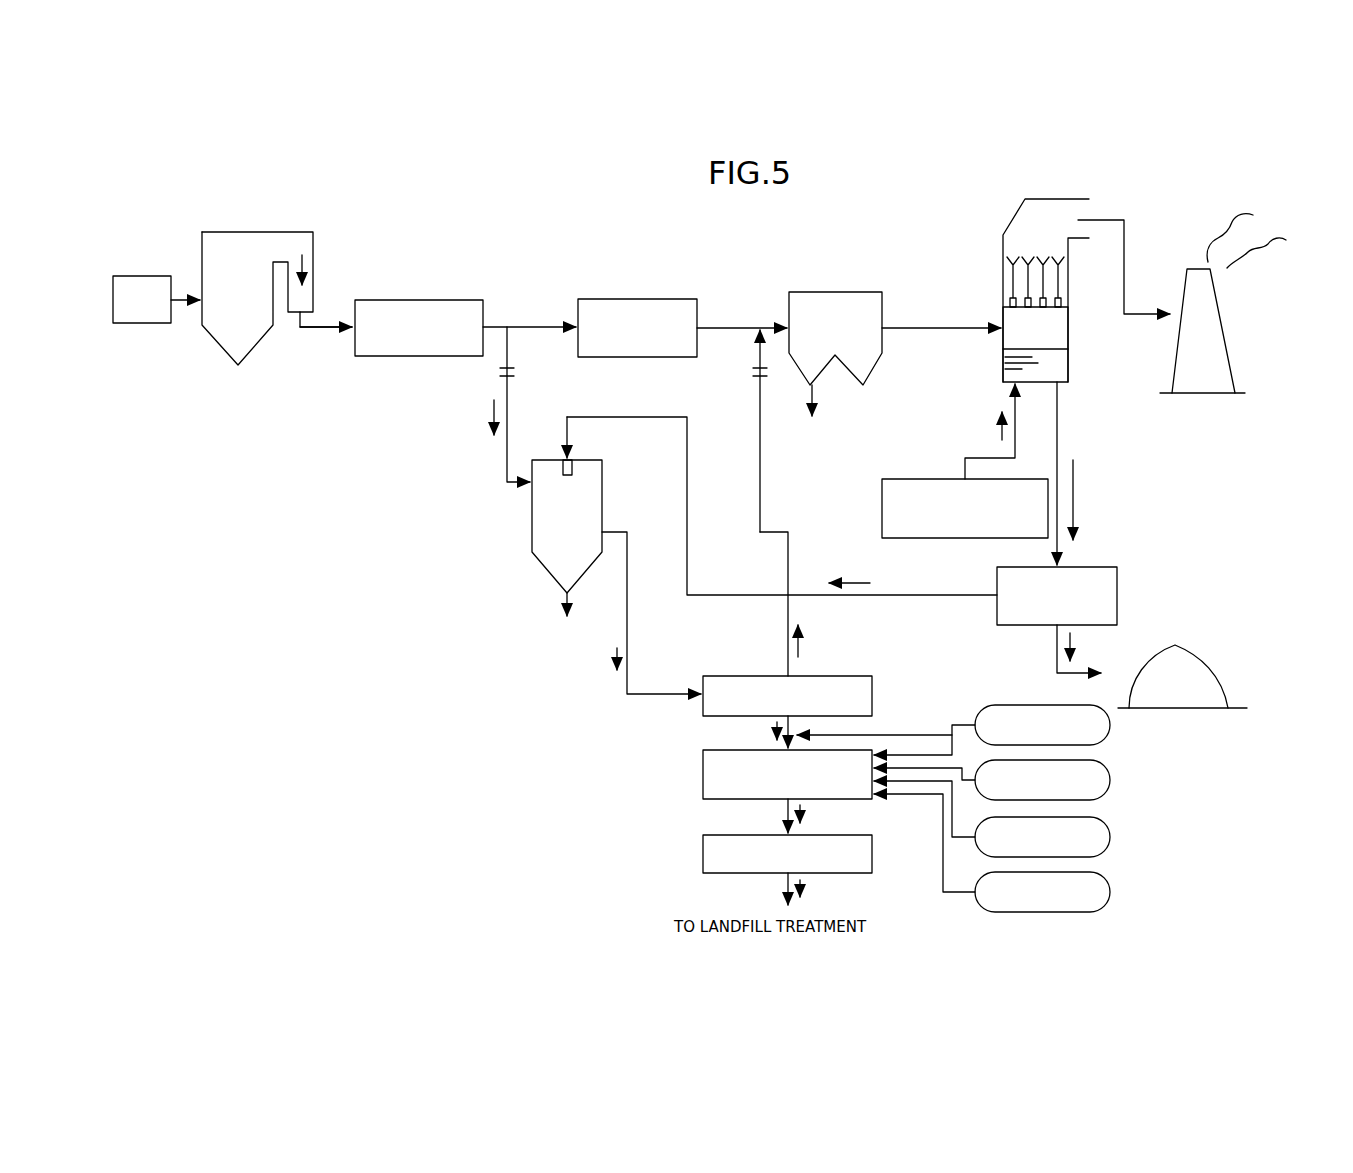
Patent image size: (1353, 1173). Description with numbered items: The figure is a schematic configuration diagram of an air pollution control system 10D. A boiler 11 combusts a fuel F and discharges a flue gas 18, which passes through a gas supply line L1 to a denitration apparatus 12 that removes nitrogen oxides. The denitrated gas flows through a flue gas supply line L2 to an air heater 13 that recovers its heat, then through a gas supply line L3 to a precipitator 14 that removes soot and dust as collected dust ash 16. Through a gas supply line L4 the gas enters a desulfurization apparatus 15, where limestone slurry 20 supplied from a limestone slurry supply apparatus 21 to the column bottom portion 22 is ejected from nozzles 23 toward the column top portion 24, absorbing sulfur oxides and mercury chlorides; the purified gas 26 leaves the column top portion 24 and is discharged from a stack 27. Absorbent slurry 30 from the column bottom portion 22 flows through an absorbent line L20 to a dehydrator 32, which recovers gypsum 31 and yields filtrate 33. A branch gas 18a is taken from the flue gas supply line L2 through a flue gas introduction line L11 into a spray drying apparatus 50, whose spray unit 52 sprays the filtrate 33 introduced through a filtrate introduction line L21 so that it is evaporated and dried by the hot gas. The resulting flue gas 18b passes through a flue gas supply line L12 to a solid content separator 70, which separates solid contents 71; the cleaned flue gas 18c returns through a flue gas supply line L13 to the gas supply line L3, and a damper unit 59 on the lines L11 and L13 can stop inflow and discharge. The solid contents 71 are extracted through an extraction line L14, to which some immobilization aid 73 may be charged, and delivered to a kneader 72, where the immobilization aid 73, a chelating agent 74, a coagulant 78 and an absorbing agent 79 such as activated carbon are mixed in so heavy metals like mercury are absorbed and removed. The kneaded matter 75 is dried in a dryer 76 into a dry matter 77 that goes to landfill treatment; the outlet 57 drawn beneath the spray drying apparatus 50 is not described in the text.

The air pollution control system 10D is at (648, 210).
The fuel F is at (144, 276).
The boiler 11 is at (222, 232).
The flue gas 18 is at (305, 272).
The denitration apparatus 12 is at (430, 300).
The gas supply line L1 is at (335, 332).
The flue gas supply line L2 is at (538, 322).
The damper unit 59 is at (498, 371).
The flue gas introduction line L11 is at (506, 456).
The branch gas 18a is at (492, 410).
The air heater 13 is at (674, 299).
The gas supply line L3 is at (748, 322).
The flue gas supply line L13 is at (760, 432).
The precipitator 14 is at (836, 292).
The collected dust ash 16 is at (822, 410).
The gas supply line L4 is at (940, 322).
The desulfurization apparatus 15 is at (1043, 270).
The column bottom portion 22 is at (1071, 366).
The nozzles 23 is at (1063, 296).
The column top portion 24 is at (1012, 215).
The limestone slurry 20 is at (998, 422).
The purified gas 26 is at (1125, 258).
The stack 27 is at (1228, 330).
The limestone slurry supply apparatus 21 is at (940, 538).
The absorbent line L20 is at (1060, 430).
The absorbent slurry 30 is at (1076, 496).
The dehydrator 32 is at (1117, 595).
The gypsum 31 is at (1073, 648).
The filtrate introduction line L21 is at (748, 593).
The filtrate 33 is at (846, 578).
The spray drying apparatus 50 is at (584, 564).
The spray unit 52 is at (565, 466).
The discharged ash 57 is at (563, 604).
The flue gas 18b is at (614, 656).
The flue gas supply line L12 is at (658, 692).
The flue gas 18c is at (800, 646).
The solid content separator 70 is at (873, 690).
The solid contents 71 is at (774, 730).
The extraction line L14 is at (800, 726).
The kneader 72 is at (703, 778).
The kneaded matter 75 is at (802, 816).
The dryer 76 is at (873, 857).
The dry matter 77 is at (802, 889).
The immobilization aid 73 is at (1110, 728).
The chelating agent 74 is at (1110, 783).
The coagulant 78 is at (1110, 839).
The absorbing agent 79 is at (1110, 894).